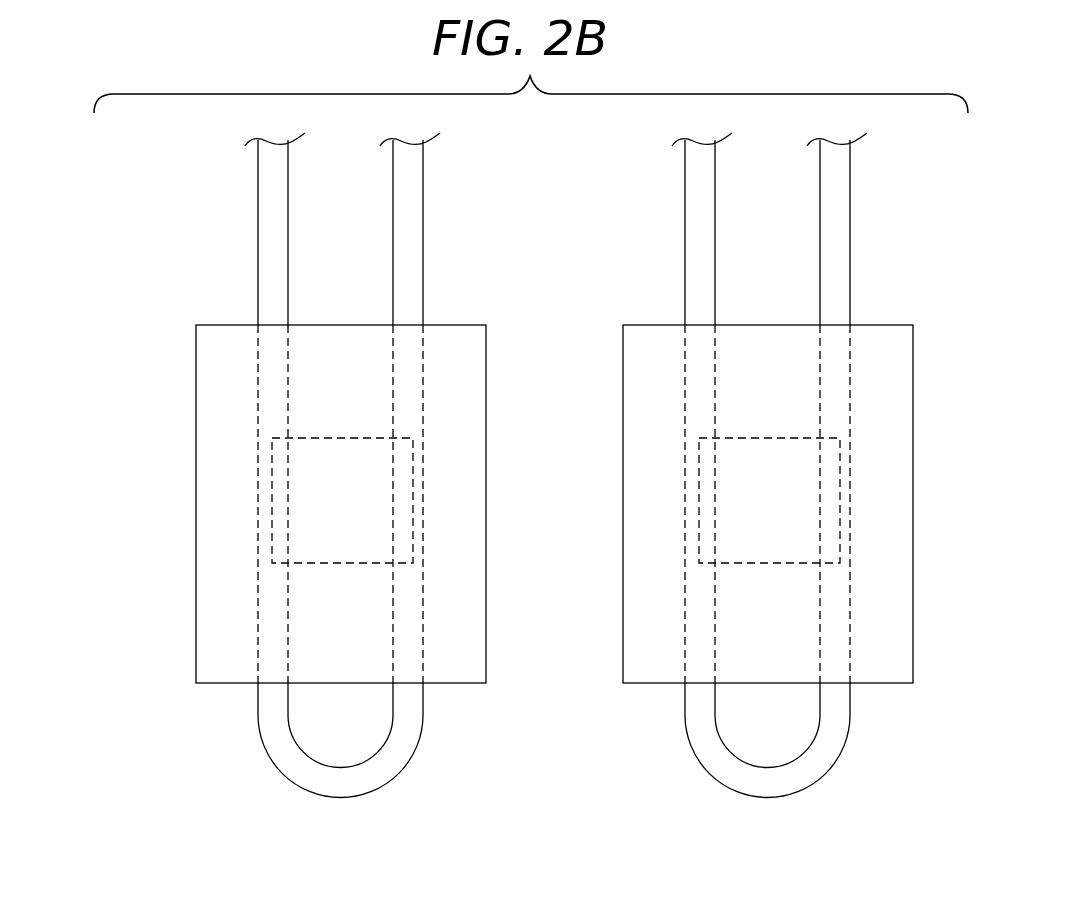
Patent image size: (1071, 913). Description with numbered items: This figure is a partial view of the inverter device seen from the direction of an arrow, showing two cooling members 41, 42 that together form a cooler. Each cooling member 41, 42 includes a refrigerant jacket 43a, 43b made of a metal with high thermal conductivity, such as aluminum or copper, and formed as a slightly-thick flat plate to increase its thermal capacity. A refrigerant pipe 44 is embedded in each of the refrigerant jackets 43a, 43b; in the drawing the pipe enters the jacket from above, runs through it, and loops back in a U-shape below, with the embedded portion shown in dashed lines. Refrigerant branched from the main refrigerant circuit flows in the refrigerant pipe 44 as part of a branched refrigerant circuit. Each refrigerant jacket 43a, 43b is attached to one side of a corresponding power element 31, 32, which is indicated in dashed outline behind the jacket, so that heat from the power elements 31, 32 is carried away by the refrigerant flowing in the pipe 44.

The power element 31 is at (272, 492).
The power element 32 is at (699, 492).
The cooling member 41 is at (294, 584).
The cooling member 42 is at (722, 584).
The refrigerant jacket 43a is at (195, 603).
The refrigerant jacket 43b is at (622, 603).
The refrigerant pipe 44 is at (418, 238).